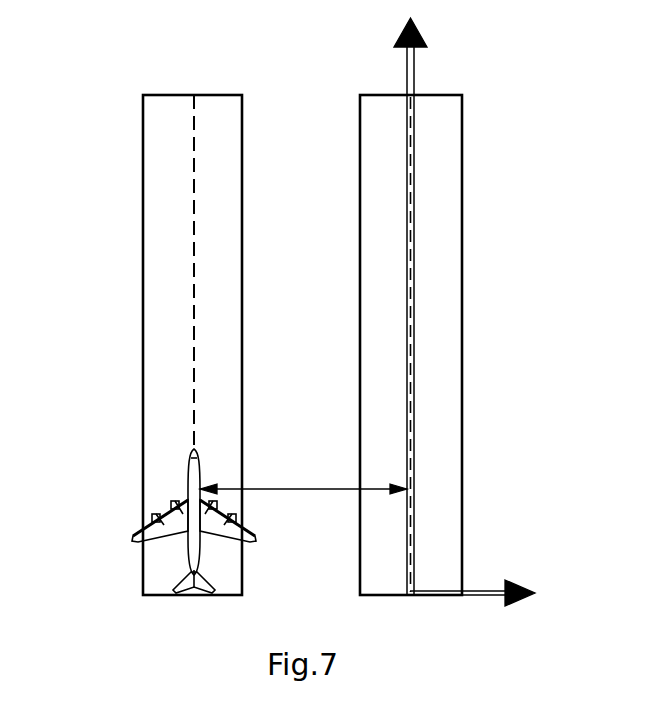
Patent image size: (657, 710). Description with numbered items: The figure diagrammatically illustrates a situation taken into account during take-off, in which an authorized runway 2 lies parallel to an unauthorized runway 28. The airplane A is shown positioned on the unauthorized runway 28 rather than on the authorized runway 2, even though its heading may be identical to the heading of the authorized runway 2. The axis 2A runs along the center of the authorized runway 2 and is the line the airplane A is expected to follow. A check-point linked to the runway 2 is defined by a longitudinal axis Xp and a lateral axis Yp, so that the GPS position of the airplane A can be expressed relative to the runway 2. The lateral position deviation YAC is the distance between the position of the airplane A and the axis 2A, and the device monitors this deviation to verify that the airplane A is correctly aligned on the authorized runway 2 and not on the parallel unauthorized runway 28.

The unauthorized runway 28 is at (143, 290).
The airplane A is at (188, 477).
The runway 2 is at (462, 393).
The axis of the runway 2A is at (414, 285).
The longitudinal coordinate of the runway check-point Xp is at (414, 64).
The lateral coordinate of the runway check-point Yp is at (478, 587).
The lateral position deviation YAC is at (306, 488).